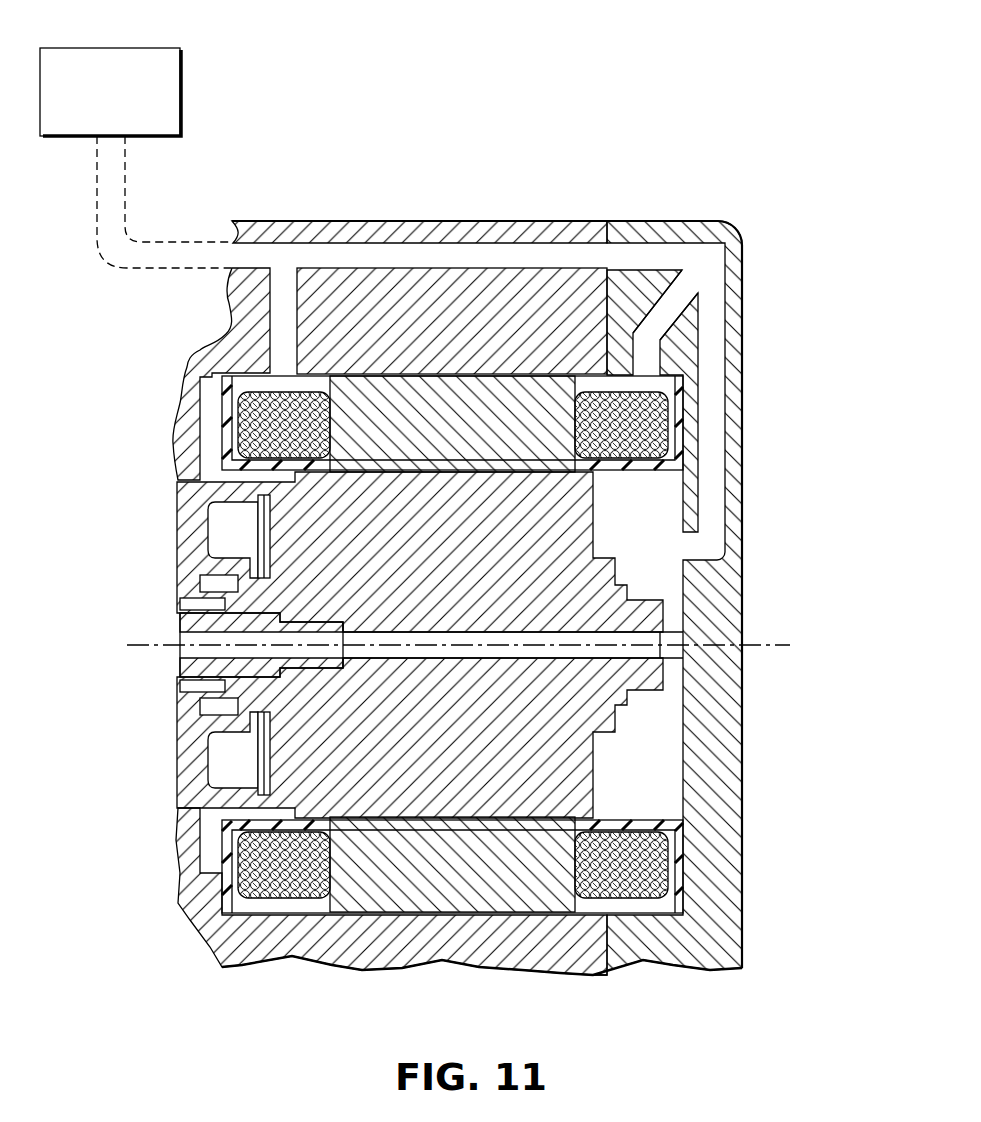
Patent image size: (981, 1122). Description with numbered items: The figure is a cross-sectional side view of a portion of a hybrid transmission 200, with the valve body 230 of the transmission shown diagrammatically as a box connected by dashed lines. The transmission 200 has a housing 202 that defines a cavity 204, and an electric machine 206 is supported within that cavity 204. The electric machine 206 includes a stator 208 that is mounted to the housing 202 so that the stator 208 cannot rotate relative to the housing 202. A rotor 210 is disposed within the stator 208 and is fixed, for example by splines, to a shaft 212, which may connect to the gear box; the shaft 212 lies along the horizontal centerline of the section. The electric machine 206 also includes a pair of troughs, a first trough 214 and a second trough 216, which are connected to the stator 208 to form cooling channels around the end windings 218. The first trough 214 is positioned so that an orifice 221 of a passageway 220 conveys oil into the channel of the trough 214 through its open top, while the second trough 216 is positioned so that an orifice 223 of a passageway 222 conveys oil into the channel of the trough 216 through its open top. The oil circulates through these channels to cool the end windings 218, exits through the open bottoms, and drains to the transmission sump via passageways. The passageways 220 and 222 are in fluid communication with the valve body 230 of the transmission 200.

The hybrid transmission 200 is at (556, 172).
The housing 202 is at (335, 222).
The cavity 204 is at (646, 546).
The electric machine 206 is at (353, 765).
The stator 208 is at (453, 410).
The rotor 210 is at (353, 530).
The shaft 212 is at (195, 623).
The first trough 214 is at (678, 427).
The second trough 216 is at (227, 428).
The end windings 218 is at (260, 403).
The passageway 220 is at (670, 307).
The orifice 221 is at (635, 353).
The passageway 222 is at (282, 320).
The orifice 223 is at (267, 363).
The valve body 230 is at (110, 47).